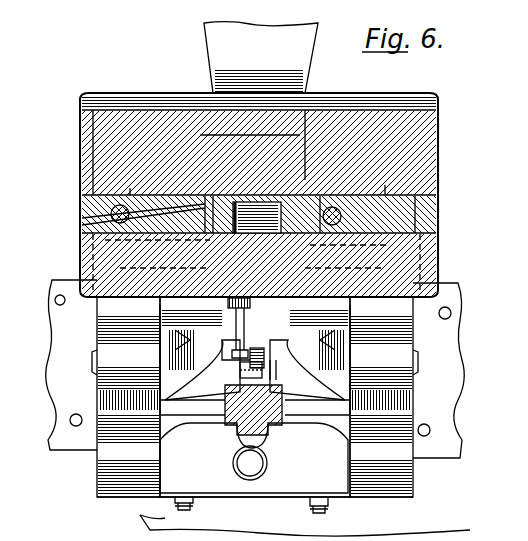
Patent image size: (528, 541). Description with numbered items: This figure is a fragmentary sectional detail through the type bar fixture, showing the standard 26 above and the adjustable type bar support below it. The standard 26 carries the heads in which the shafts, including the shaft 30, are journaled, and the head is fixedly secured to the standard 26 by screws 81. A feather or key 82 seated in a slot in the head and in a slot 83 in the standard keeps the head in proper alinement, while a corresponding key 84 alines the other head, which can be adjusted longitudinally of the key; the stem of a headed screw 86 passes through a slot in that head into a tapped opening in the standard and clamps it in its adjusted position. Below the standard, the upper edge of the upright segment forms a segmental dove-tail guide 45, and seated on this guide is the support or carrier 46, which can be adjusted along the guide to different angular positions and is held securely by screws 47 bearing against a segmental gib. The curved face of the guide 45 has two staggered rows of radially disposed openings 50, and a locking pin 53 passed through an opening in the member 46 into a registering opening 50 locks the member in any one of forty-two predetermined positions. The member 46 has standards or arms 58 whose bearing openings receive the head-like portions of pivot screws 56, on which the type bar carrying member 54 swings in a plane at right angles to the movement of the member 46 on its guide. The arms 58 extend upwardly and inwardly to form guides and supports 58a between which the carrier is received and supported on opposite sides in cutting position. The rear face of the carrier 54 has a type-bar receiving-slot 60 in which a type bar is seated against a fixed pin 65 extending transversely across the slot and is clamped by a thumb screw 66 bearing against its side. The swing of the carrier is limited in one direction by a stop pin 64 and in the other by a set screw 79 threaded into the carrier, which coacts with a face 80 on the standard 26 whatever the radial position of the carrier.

The standard 26 is at (310, 60).
The headed screw 86 is at (395, 185).
The key 84 is at (440, 218).
The feather or key 82 is at (108, 216).
The screws 81 is at (125, 218).
The slot 83 is at (257, 217).
The segmental guide 45 is at (468, 333).
The radially disposed openings 50 is at (65, 304).
The standards or arms 58 is at (150, 343).
The pivot screws 56 is at (95, 372).
The type bar carrying member 54 is at (312, 332).
The set screw 79 is at (232, 312).
The face 80 is at (208, 299).
The type-bar receiving-slot 60 is at (258, 350).
The fixed pin 65 is at (240, 375).
The thumb screw 66 is at (280, 380).
The locking pin 53 is at (248, 440).
The guides and supports 58a is at (218, 425).
The stop pin 64 is at (268, 466).
The support or carrier 46 is at (120, 497).
The screws 47 is at (196, 506).
The shaft 30 is at (305, 528).